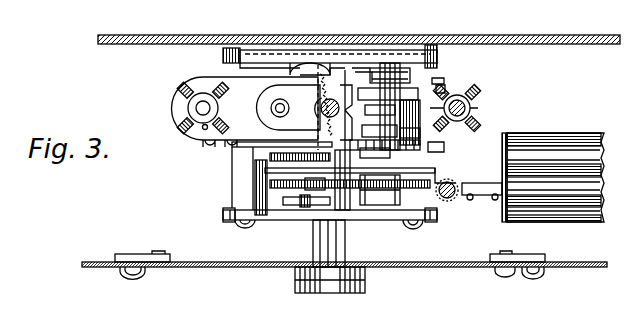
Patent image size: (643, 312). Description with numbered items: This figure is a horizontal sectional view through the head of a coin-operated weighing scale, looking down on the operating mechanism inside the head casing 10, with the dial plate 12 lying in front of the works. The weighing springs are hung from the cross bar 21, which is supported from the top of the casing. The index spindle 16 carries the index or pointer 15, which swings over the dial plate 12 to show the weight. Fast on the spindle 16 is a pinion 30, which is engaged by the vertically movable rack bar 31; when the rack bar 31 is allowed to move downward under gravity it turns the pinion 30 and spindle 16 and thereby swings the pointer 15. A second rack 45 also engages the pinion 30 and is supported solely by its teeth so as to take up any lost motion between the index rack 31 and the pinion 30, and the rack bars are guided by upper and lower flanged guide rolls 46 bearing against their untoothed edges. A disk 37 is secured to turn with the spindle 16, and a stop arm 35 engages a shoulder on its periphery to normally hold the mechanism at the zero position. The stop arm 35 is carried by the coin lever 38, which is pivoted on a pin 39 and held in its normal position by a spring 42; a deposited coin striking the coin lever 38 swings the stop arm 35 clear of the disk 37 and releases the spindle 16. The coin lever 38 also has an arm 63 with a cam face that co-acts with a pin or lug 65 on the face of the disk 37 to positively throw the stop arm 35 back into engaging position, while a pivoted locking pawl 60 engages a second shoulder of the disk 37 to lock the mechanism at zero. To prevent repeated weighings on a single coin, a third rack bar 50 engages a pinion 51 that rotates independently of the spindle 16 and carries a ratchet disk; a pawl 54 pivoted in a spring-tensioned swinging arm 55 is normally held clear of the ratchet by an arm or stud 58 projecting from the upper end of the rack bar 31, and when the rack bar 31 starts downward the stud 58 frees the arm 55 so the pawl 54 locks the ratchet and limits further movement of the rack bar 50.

The head casing 10 is at (591, 44).
The dial plate 12 is at (111, 267).
The index or pointer 15 is at (366, 281).
The index spindle 16 is at (325, 230).
The cross bar 21 is at (205, 80).
The pinion 30 is at (310, 162).
The rack bar 31 is at (345, 128).
The stop arm 35 is at (398, 187).
The disk 37 is at (358, 194).
The coin lever 38 is at (464, 185).
The pin 39 is at (421, 228).
The spring 42 is at (448, 181).
The second rack 45 is at (395, 150).
The flanged guide rolls 46 is at (428, 150).
The third rack bar 50 is at (389, 47).
The pinion 51 is at (356, 66).
The pawl 54 is at (471, 100).
The swinging arm 55 is at (430, 146).
The arm or stud 58 is at (443, 134).
The locking pawl 60 is at (258, 188).
The arm 63 is at (382, 204).
The pin or lug 65 is at (303, 203).